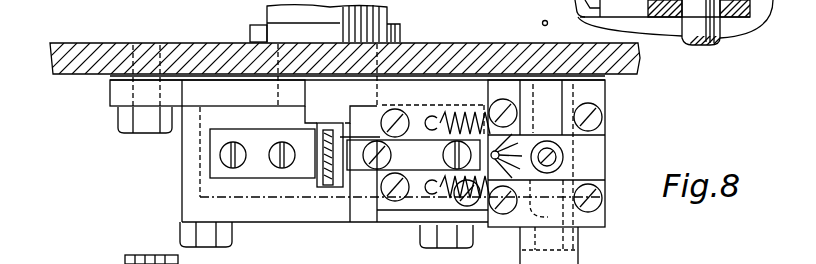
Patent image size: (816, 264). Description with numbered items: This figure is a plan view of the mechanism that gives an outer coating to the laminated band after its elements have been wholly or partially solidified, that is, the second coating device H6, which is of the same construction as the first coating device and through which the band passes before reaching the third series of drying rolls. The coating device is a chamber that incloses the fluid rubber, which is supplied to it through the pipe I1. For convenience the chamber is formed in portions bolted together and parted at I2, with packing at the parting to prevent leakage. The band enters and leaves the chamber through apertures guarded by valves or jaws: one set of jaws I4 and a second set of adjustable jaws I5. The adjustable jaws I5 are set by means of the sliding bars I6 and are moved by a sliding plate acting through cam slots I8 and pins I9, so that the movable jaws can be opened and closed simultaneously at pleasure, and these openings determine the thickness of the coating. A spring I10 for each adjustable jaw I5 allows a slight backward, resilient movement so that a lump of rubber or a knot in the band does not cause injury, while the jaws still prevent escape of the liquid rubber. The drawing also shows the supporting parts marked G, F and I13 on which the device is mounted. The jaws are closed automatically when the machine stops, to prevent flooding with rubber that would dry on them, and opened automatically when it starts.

The base plate G is at (438, 54).
The insulating strip I13 is at (217, 80).
The pipe I1 is at (387, 13).
The parting of the chamber I2 is at (210, 108).
The valves or jaws I4 is at (213, 172).
The adjustable jaws I5 is at (357, 157).
The sliding bars I6 is at (565, 162).
The cam slots I8 is at (575, 165).
The pins I9 is at (560, 158).
The spring I10 is at (472, 126).
The contact bar F is at (297, 188).
The second coating device H6 is at (265, 222).